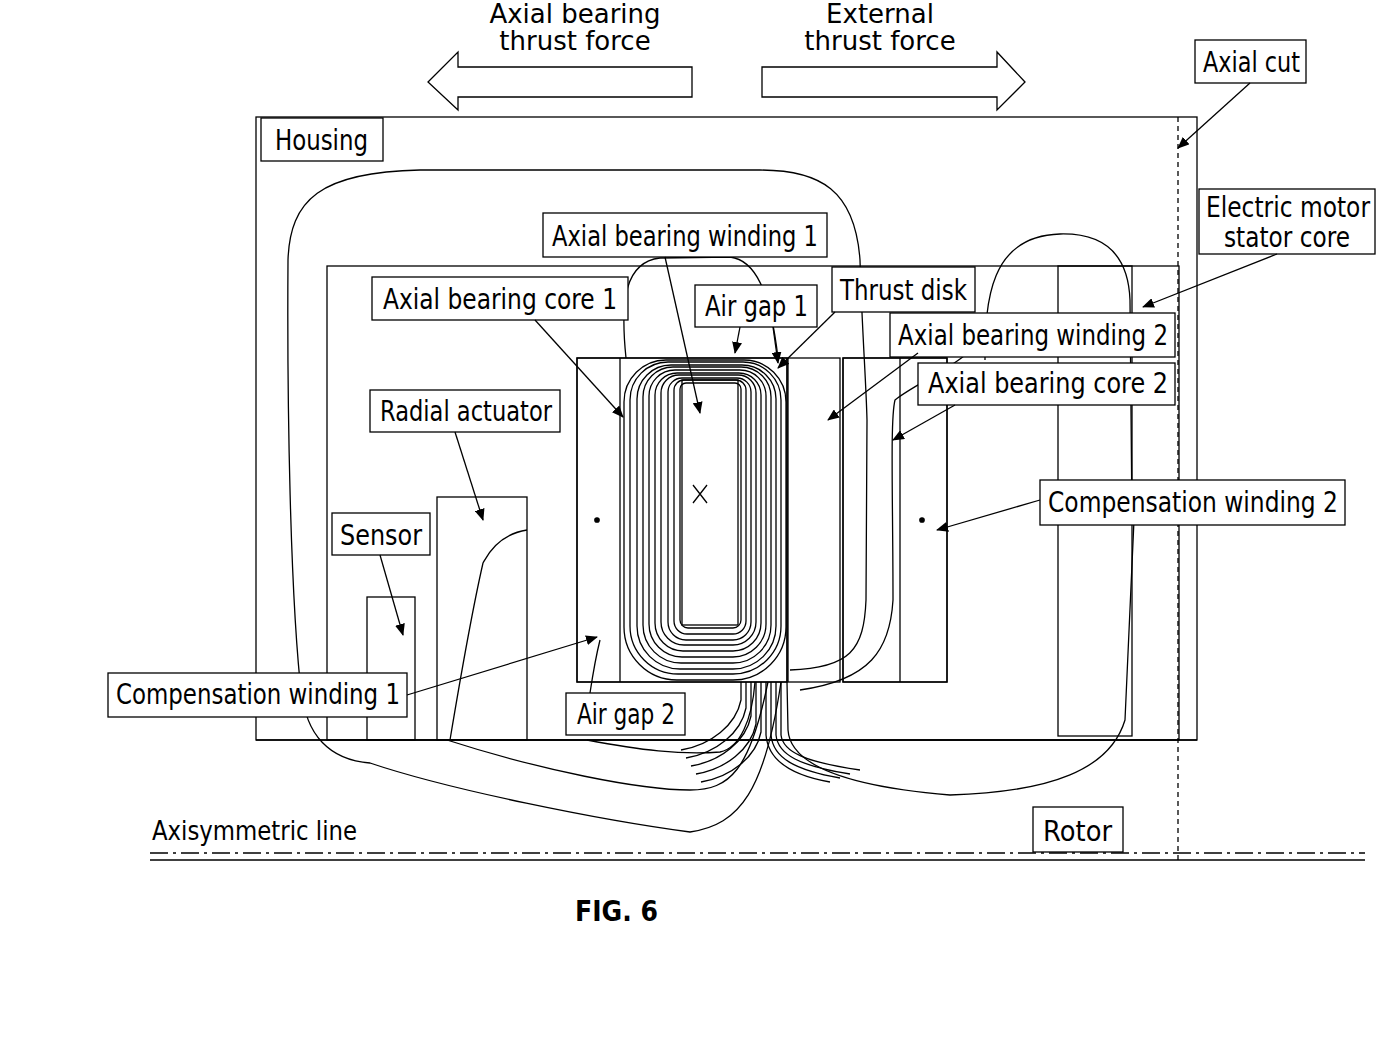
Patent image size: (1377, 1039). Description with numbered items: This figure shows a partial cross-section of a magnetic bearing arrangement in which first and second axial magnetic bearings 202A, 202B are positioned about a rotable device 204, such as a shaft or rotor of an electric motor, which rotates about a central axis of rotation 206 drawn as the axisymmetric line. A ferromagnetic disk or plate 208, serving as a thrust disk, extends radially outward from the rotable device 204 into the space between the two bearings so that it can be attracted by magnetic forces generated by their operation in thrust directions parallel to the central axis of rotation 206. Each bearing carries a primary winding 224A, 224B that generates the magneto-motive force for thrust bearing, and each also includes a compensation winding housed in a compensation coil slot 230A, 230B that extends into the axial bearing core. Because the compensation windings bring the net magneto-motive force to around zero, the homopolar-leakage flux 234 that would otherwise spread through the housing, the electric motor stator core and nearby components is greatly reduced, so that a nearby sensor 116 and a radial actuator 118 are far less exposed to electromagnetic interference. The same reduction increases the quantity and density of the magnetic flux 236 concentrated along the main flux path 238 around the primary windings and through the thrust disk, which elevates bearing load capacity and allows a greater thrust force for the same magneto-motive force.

The sensor 116 is at (377, 653).
The actuator 118 is at (456, 512).
The first axial magnetic bearing 202A is at (600, 470).
The second axial magnetic bearing 202B is at (873, 667).
The rotable device 204 is at (1150, 790).
The central axis of rotation 206 is at (1226, 860).
The disk or plate 208 is at (893, 450).
The primary winding 224A is at (637, 633).
The primary winding 224B is at (810, 566).
The compensation coil slot 230A is at (590, 387).
The compensation coil slot 230B is at (933, 668).
The homopolar-leakage flux 234 is at (575, 800).
The magnetic flux 236 is at (530, 530).
The main flux path 238 is at (655, 365).